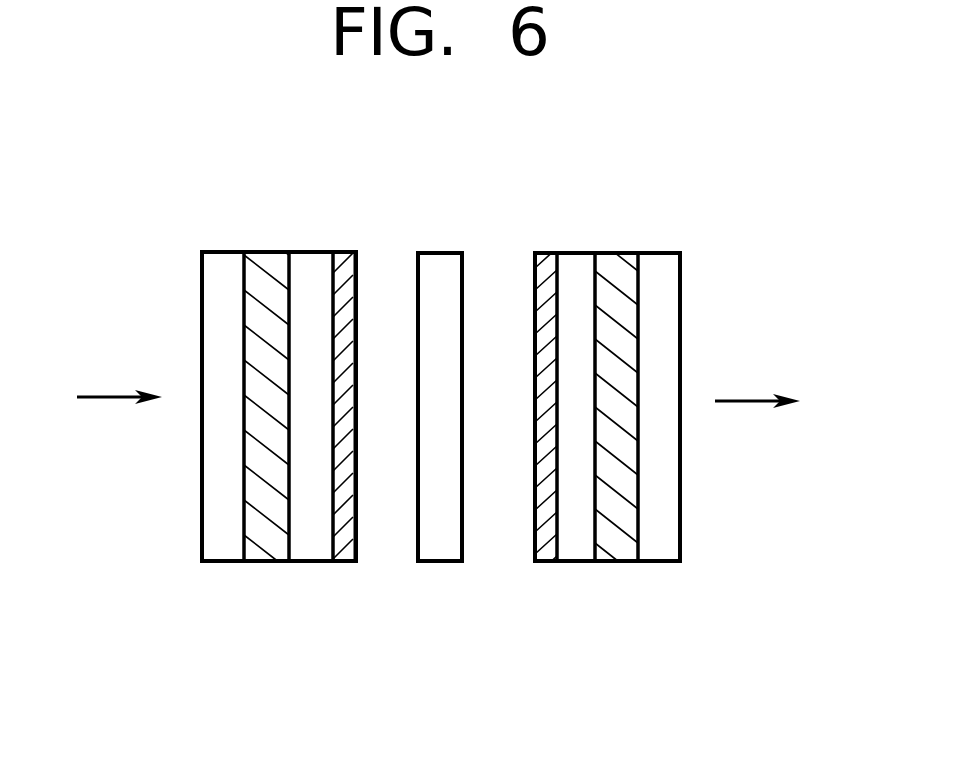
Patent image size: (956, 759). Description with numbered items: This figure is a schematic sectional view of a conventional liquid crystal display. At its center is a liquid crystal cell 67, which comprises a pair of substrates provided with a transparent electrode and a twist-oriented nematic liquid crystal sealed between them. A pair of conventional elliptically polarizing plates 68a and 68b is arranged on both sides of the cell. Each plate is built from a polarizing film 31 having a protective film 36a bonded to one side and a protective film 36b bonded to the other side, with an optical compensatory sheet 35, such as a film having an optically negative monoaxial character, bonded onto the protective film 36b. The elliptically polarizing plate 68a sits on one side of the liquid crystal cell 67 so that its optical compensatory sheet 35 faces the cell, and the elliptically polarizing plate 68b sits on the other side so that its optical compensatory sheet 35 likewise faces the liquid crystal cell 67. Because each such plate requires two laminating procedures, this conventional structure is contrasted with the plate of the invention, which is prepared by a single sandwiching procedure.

The polarizing film 31 is at (253, 547).
The optical compensatory sheet 35 is at (340, 540).
The protective film 36a is at (220, 542).
The protective film 36b is at (305, 542).
The liquid crystal cell 67 is at (437, 545).
The elliptically polarizing plate 68a is at (168, 516).
The elliptically polarizing plate 68b is at (697, 500).